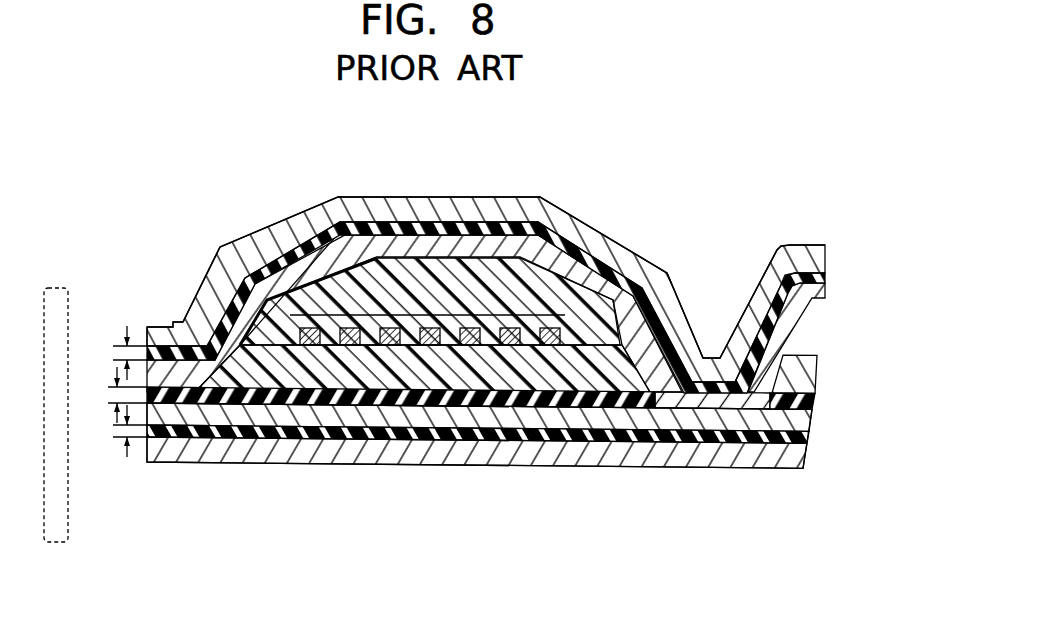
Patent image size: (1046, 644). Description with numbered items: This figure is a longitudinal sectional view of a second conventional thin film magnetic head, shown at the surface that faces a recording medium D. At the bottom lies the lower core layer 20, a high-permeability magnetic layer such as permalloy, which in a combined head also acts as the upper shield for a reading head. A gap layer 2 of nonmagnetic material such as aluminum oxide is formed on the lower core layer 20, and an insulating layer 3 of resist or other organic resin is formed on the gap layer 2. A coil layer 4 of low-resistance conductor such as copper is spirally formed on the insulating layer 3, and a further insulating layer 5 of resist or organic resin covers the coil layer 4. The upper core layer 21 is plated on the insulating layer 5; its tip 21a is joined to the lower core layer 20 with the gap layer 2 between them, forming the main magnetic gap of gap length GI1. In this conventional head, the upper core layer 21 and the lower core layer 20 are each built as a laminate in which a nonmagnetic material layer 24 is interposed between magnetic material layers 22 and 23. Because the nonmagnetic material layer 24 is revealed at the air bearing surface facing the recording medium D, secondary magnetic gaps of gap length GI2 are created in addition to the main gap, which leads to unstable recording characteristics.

The gap layer 2 is at (383, 400).
The insulating layer 3 is at (462, 370).
The coil layer 4 is at (425, 316).
The insulating layer 5 is at (470, 290).
The lower core layer 20 is at (882, 400).
The upper core layer 21 is at (266, 210).
The tip of the upper core layer 21a is at (160, 310).
The magnetic material layer 22 is at (567, 233).
The magnetic material layer 23 is at (632, 272).
The nonmagnetic material layer 24 is at (582, 258).
The recording medium D is at (58, 288).
The gap length GI1 is at (117, 396).
The gap length GI2 is at (127, 354).